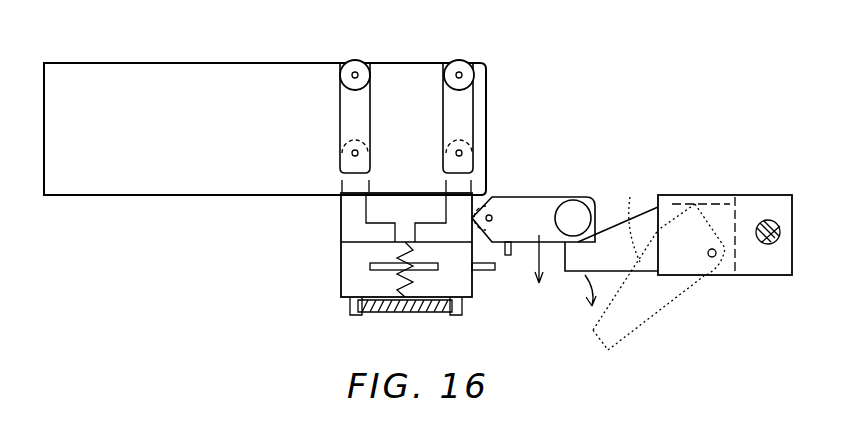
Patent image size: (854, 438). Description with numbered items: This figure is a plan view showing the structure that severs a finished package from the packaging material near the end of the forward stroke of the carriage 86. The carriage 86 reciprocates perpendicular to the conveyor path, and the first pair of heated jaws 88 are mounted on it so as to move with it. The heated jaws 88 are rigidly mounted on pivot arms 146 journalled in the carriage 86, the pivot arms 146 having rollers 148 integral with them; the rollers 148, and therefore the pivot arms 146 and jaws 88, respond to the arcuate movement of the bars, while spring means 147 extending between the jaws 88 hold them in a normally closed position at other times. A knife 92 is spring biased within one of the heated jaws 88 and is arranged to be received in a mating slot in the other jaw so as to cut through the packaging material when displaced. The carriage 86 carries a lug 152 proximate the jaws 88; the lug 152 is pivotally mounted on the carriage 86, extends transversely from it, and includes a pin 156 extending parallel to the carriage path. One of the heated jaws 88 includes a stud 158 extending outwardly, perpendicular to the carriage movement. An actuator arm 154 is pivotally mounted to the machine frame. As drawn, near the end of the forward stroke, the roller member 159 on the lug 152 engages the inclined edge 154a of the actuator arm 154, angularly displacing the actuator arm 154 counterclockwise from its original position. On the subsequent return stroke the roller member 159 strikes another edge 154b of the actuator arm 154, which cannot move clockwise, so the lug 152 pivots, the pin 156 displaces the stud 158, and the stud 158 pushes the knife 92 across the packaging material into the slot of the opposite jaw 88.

The carriage 86 is at (204, 124).
The first pair of heated jaws 88 is at (310, 302).
The knife 92 is at (433, 270).
The pivot arms 146 is at (466, 122).
The spring means 147 is at (383, 318).
The rollers 148 is at (462, 61).
The lug 152 is at (510, 203).
The actuator arm 154 is at (640, 227).
The inclined edge 154a is at (617, 222).
The another edge 154b is at (575, 275).
The pin 156 is at (509, 256).
The stud 158 is at (497, 272).
The roller member 159 is at (572, 215).